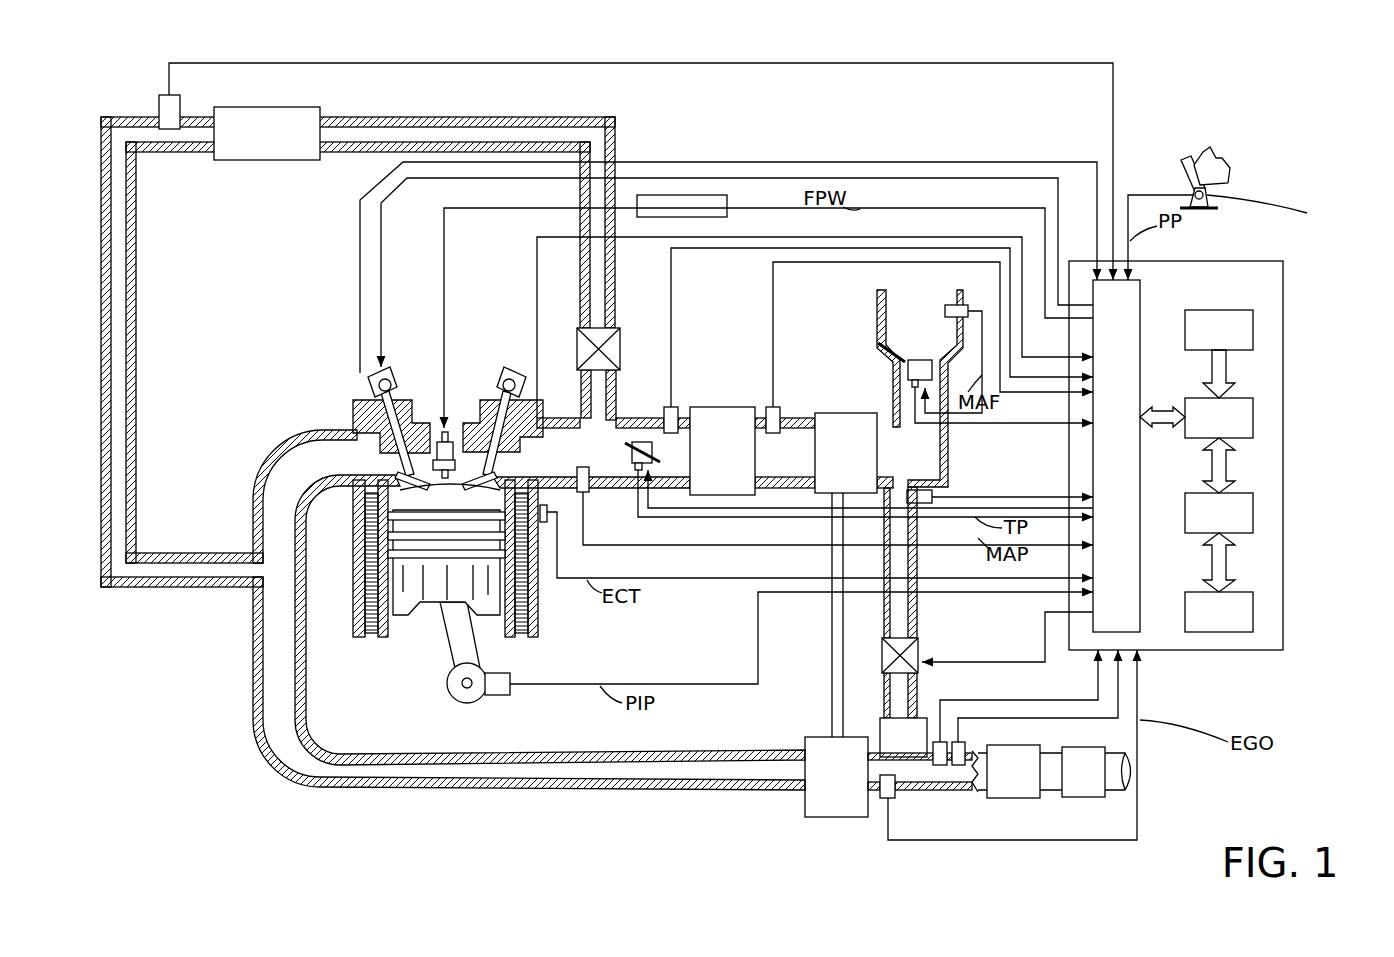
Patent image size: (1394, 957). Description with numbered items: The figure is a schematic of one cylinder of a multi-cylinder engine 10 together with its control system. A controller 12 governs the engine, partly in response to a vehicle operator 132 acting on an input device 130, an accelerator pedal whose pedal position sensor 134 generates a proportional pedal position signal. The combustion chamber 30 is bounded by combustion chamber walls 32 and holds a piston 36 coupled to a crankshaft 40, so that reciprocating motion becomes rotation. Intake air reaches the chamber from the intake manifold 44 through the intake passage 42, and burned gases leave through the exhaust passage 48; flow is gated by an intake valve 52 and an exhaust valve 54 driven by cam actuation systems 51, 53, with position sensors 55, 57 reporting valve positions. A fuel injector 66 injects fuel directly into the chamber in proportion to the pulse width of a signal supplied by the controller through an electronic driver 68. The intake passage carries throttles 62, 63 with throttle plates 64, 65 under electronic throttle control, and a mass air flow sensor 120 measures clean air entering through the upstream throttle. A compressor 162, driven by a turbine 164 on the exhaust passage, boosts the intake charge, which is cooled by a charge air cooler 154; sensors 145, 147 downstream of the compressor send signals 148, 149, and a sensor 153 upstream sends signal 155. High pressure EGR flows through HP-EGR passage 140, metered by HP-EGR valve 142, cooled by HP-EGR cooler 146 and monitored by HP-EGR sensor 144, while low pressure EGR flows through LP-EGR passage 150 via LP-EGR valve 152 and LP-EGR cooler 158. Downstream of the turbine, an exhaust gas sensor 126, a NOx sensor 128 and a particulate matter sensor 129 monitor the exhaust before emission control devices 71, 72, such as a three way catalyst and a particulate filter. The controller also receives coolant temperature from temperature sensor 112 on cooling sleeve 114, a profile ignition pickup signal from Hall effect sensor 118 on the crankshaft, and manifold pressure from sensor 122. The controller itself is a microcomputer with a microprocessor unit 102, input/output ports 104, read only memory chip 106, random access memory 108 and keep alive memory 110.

The engine 10 is at (290, 357).
The controller 12 is at (1283, 263).
The combustion chamber 30 is at (420, 498).
The combustion chamber walls 32 is at (393, 625).
The piston 36 is at (430, 588).
The crankshaft 40 is at (455, 698).
The intake passage 42 is at (920, 388).
The intake manifold 44 is at (693, 453).
The exhaust passage 48 is at (529, 610).
The cam actuation system 51 is at (505, 366).
The intake valve 52 is at (487, 470).
The cam actuation system 53 is at (385, 366).
The exhaust valve 54 is at (403, 473).
The position sensor 55 is at (526, 380).
The position sensor 57 is at (372, 390).
The throttle 62 is at (638, 441).
The throttle 63 is at (880, 346).
The throttle plate 64 is at (634, 455).
The throttle plate 65 is at (907, 369).
The fuel injector 66 is at (446, 425).
The electronic driver 68 is at (728, 206).
The emission control device 71 is at (1013, 771).
The emission control device 72 is at (1083, 772).
The microprocessor unit 102 is at (1253, 418).
The input/output ports 104 is at (1142, 287).
The read only memory chip 106 is at (1253, 330).
The random access memory 108 is at (1253, 513).
The keep alive memory 110 is at (1253, 612).
The temperature sensor 112 is at (543, 525).
The cooling sleeve 114 is at (523, 603).
The Hall effect sensor 118 is at (497, 697).
The mass air flow sensor 120 is at (950, 304).
The manifold pressure sensor 122 is at (579, 468).
The exhaust gas sensor 126 is at (893, 799).
The NOx sensor 128 is at (945, 766).
The particulate matter sensor 129 is at (963, 742).
The input device 130 is at (1182, 174).
The vehicle operator 132 is at (1230, 153).
The pedal position sensor 134 is at (1237, 234).
The HP-EGR passage 140 is at (522, 118).
The HP-EGR valve 142 is at (616, 346).
The HP-EGR sensor 144 is at (160, 97).
The sensor 145 is at (780, 408).
The HP-EGR cooler 146 is at (267, 133).
The sensor 147 is at (679, 408).
The signal 148 is at (773, 322).
The signal 149 is at (671, 322).
The LP-EGR passage 150 is at (918, 610).
The LP-EGR valve 152 is at (881, 660).
The sensor 153 is at (911, 490).
The charge air cooler 154 is at (722, 451).
The signal 155 is at (975, 497).
The LP-EGR cooler 158 is at (903, 737).
The compressor 162 is at (846, 575).
The turbine 164 is at (836, 777).